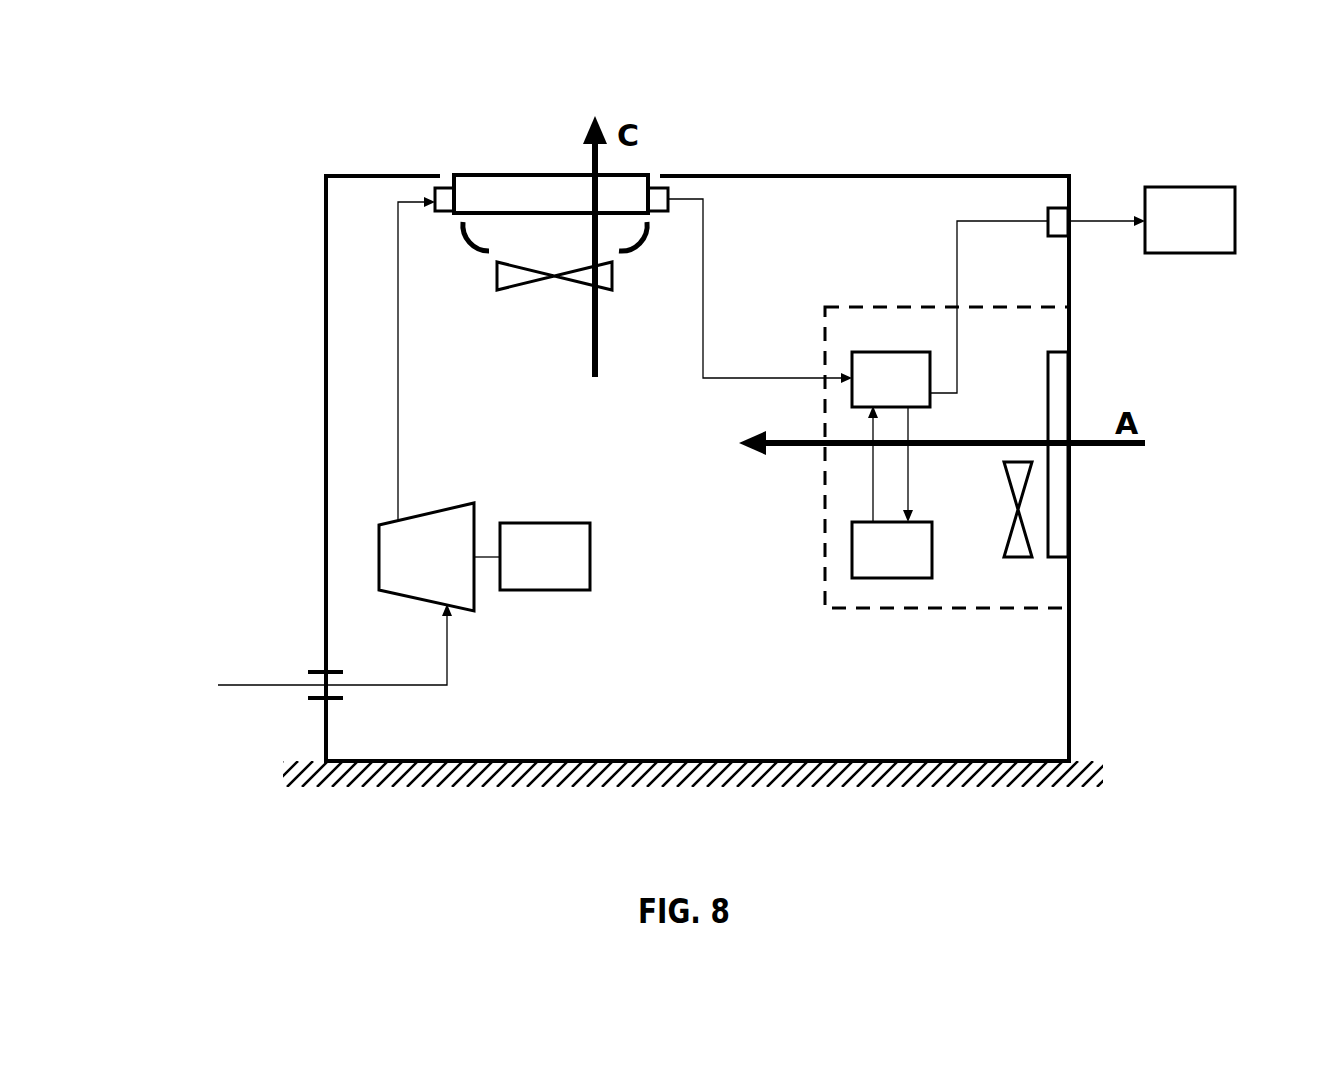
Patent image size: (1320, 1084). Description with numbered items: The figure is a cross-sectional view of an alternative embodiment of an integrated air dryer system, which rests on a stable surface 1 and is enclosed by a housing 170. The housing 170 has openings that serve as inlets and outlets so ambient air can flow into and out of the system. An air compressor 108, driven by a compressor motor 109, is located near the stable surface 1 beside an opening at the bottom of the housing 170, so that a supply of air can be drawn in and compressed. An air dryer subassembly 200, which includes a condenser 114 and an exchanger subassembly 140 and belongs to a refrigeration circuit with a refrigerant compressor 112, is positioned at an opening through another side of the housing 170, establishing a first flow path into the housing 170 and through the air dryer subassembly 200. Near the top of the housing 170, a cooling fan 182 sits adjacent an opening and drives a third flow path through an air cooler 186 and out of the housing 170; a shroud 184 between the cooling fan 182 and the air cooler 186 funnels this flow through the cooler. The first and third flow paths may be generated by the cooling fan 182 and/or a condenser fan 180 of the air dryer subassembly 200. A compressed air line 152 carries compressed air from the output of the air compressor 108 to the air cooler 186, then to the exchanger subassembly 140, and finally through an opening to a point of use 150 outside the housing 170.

The stable surface 1 is at (280, 750).
The air compressor 108 is at (378, 547).
The compressor motor 109 is at (523, 523).
The refrigerant compressor 112 is at (905, 578).
The condenser 114 is at (1072, 556).
The exchanger subassembly 140 is at (885, 353).
The point of use 150 is at (1180, 186).
The compressed air line 152 is at (402, 375).
The housing 170 is at (377, 172).
The condenser fan 180 is at (1020, 557).
The cooling fan 182 is at (497, 278).
The shroud 184 is at (478, 237).
The air cooler 186 is at (636, 173).
The air dryer subassembly 200 is at (843, 307).